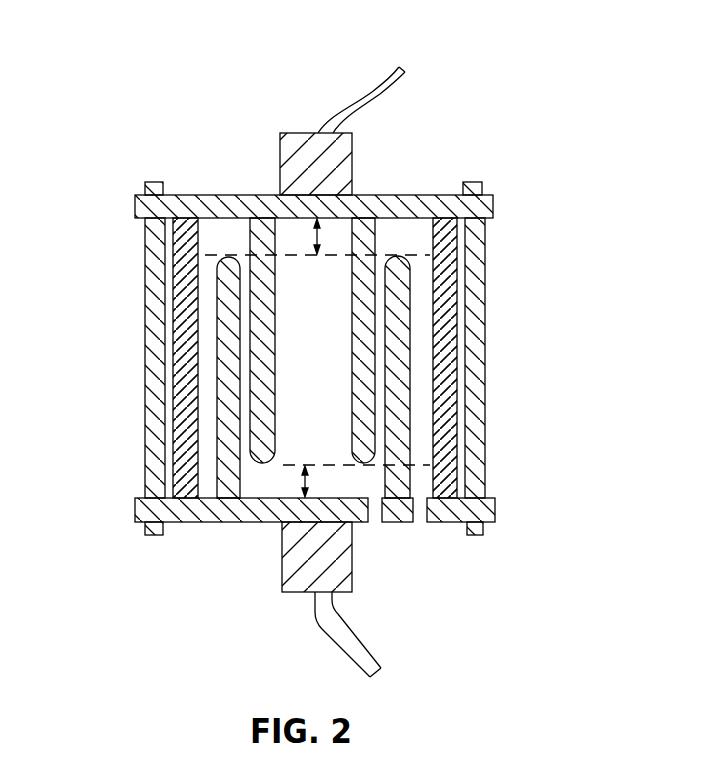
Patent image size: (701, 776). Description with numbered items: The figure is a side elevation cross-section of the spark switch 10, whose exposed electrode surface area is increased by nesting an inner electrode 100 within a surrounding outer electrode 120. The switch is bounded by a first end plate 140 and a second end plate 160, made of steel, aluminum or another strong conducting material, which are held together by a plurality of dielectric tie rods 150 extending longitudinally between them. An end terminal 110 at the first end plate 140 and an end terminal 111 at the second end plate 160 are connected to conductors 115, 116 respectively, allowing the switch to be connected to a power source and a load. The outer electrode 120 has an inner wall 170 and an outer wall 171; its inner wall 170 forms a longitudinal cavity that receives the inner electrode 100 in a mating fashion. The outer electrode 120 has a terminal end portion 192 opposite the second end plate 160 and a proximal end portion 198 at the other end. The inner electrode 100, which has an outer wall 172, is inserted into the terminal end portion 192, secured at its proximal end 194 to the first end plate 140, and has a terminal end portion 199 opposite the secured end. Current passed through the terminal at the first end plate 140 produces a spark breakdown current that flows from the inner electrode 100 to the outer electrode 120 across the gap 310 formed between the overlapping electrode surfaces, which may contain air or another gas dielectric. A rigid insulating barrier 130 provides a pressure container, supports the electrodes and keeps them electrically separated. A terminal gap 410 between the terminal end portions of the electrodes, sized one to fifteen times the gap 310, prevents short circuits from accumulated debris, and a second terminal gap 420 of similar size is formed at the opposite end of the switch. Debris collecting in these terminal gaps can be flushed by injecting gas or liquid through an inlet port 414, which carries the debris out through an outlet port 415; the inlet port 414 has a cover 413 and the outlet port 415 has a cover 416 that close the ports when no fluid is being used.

The spark switch 10 is at (630, 49).
The inner electrode 100 is at (360, 446).
The end terminal 110 is at (340, 172).
The end terminal 111 is at (334, 594).
The conductor 115 is at (393, 91).
The conductor 116 is at (378, 661).
The outer electrode 120 is at (390, 343).
The insulating barrier 130 is at (173, 363).
The first end plate 140 is at (270, 206).
The tie rods 150 is at (147, 273).
The second end plate 160 is at (283, 537).
The inner wall of the outer electrode 170 is at (233, 400).
The outer wall of the outer electrode 171 is at (258, 450).
The outer wall of the inner electrode 172 is at (225, 455).
The terminal end portion of the outer electrode 192 is at (172, 297).
The proximal end of the inner electrode 194 is at (382, 233).
The proximal end portion of the outer electrode 198 is at (380, 479).
The terminal end portion of the inner electrode 199 is at (262, 447).
The gap 310 is at (438, 300).
The terminal gap 410 is at (293, 484).
The cover 413 is at (418, 520).
The inlet port 414 is at (424, 503).
The outlet port 415 is at (377, 518).
The cover 416 is at (368, 521).
The second terminal gap 420 is at (225, 240).